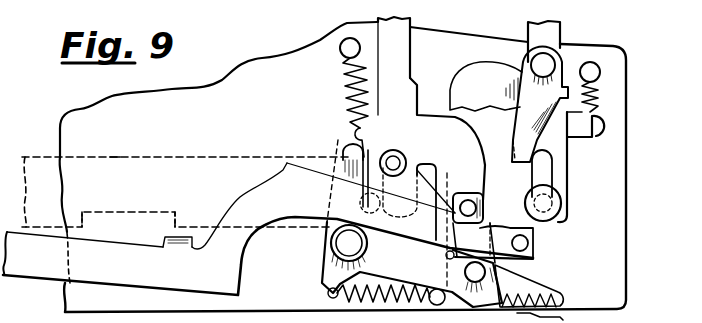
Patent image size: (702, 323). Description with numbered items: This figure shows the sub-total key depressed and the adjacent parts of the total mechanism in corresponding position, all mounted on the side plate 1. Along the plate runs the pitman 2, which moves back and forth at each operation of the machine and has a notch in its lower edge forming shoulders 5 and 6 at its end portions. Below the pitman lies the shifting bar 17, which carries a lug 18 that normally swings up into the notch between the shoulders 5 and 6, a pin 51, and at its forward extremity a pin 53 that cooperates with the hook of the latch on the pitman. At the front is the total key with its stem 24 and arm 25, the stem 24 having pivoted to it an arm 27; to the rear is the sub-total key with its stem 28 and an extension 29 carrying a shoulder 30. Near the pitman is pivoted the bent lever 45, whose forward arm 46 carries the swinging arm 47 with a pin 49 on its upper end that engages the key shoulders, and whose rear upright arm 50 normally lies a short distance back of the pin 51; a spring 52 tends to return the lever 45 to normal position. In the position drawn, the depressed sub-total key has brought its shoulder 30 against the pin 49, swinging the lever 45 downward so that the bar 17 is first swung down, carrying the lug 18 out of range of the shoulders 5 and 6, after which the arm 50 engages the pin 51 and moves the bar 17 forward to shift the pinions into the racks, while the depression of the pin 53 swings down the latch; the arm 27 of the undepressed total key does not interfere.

The plate 1 is at (185, 178).
The pitman 2 is at (113, 162).
The shoulder 5 is at (88, 213).
The shoulder 6 is at (173, 218).
The shifting bar 17 is at (145, 219).
The lug 18 is at (180, 242).
The stem 24 is at (547, 38).
The arm 25 is at (472, 78).
The arm 27 is at (540, 104).
The stem 28 is at (400, 51).
The extension 29 is at (466, 131).
The shoulder 30 is at (478, 196).
The bent lever 45 is at (412, 264).
The arm 46 is at (547, 295).
The swinging arm 47 is at (530, 259).
The pin 49 is at (481, 208).
The upright arm 50 is at (370, 225).
The pin 51 is at (348, 155).
The spring 52 is at (373, 304).
The pin 53 is at (528, 243).